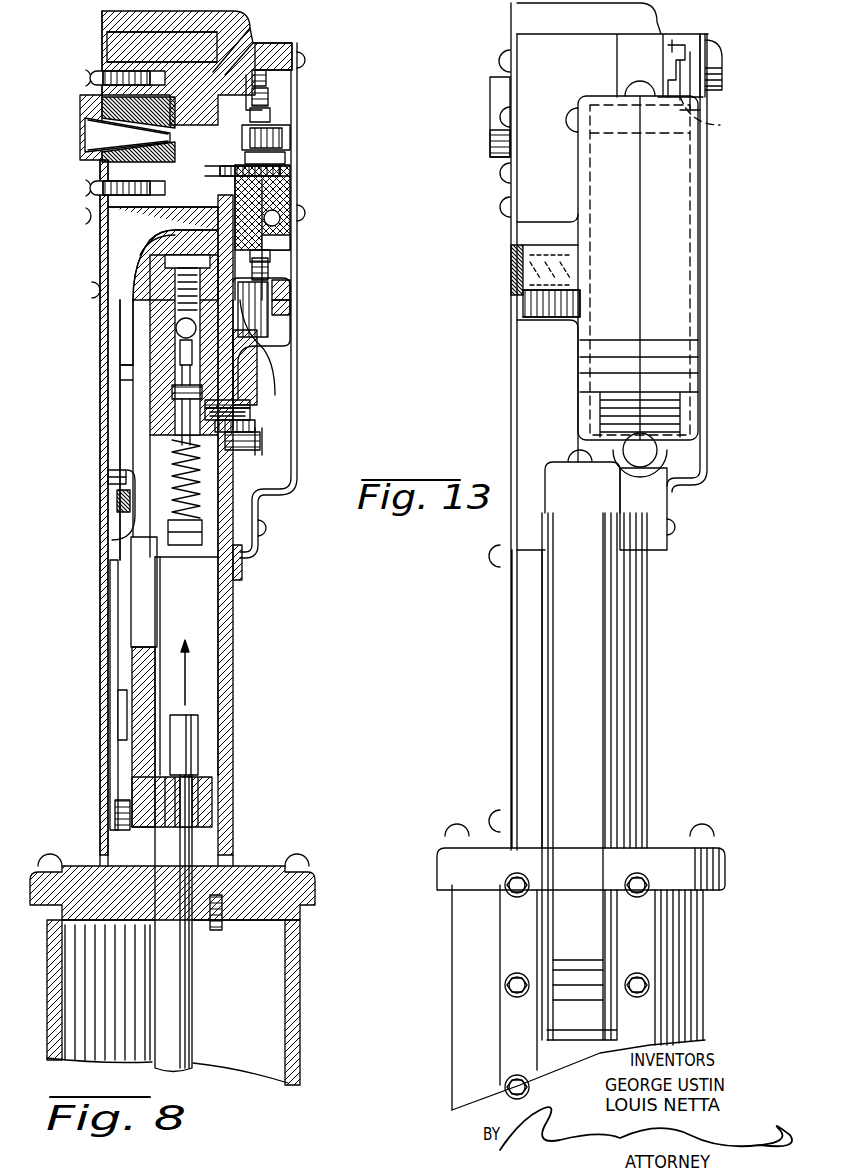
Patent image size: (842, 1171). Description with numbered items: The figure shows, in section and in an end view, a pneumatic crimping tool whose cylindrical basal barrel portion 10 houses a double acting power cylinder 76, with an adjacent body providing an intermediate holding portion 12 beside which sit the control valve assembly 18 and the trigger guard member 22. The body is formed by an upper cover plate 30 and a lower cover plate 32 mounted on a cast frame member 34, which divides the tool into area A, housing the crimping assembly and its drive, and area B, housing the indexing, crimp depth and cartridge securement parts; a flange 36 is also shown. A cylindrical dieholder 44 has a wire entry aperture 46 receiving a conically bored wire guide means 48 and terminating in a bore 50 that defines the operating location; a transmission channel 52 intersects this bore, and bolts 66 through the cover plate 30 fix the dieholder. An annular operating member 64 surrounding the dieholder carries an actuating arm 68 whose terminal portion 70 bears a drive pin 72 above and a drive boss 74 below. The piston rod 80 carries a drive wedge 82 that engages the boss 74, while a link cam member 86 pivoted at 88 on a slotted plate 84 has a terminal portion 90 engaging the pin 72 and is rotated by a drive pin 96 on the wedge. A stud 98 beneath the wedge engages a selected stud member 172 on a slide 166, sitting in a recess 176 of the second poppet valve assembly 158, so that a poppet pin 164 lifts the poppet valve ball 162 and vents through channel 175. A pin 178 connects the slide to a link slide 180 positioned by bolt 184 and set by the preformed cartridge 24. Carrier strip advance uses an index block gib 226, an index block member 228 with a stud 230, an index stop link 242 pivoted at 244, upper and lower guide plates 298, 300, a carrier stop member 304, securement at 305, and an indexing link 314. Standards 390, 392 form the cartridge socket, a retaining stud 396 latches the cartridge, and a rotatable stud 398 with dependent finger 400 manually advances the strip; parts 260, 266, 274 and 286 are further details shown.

In FIG. 8, the basal barrel portion 10 is at (297, 958).
In FIG. 13, the basal barrel portion 10 is at (697, 960).
In FIG. 13, the intermediate holding portion 12 is at (643, 695).
In FIG. 13, the control valve assembly 18 is at (562, 1053).
In FIG. 13, the trigger guard member 22 is at (598, 770).
In FIG. 13, the preformed cartridge 24 is at (680, 293).
In FIG. 8, the upper planar cover plate 30 is at (100, 412).
In FIG. 13, the upper planar cover plate 30 is at (508, 235).
In FIG. 8, the lower planar cover plate 32 is at (290, 460).
In FIG. 13, the lower planar cover plate 32 is at (707, 453).
In FIG. 8, the cast frame member 34 is at (230, 660).
In FIG. 13, the cast frame member 34 is at (538, 378).
In FIG. 8, the flange 36 is at (275, 857).
In FIG. 13, the flange 36 is at (668, 858).
In FIG. 8, the dieholder 44 is at (213, 70).
In FIG. 8, the wire entry aperture 46 is at (95, 148).
In FIG. 8, the wire guide means 48 is at (80, 118).
In FIG. 13, the wire guide means 48 is at (492, 98).
In FIG. 8, the bore 50 is at (258, 80).
In FIG. 8, the electrical contact element transmission channel 52 is at (145, 205).
In FIG. 8, the operating member 64 is at (118, 48).
In FIG. 8, the bolts 66 is at (97, 77).
In FIG. 13, the bolts 66 is at (503, 178).
In FIG. 8, the actuating arm 68 is at (113, 330).
In FIG. 8, the terminal portion 70 is at (118, 435).
In FIG. 8, the drive pin 72 is at (107, 470).
In FIG. 8, the drive boss 74 is at (123, 505).
In FIG. 8, the double acting power cylinder 76 is at (47, 1013).
In FIG. 8, the piston rod 80 is at (192, 1017).
In FIG. 8, the drive wedge 82 is at (148, 607).
In FIG. 8, the slotted plate 84 is at (108, 660).
In FIG. 8, the link cam member 86 is at (115, 605).
In FIG. 8, the pivot 88 is at (113, 708).
In FIG. 8, the terminal portion 90 is at (110, 492).
In FIG. 8, the drive pin 96 is at (115, 818).
In FIG. 8, the stud 98 is at (190, 740).
In FIG. 8, the second poppet valve assembly 158 is at (278, 288).
In FIG. 8, the poppet valve ball 162 is at (176, 328).
In FIG. 8, the poppet pin 164 is at (232, 372).
In FIG. 8, the slide 166 is at (253, 412).
In FIG. 8, the stud member 172 is at (187, 527).
In FIG. 8, the channel 175 is at (167, 347).
In FIG. 8, the recess 176 is at (167, 395).
In FIG. 8, the pin 178 is at (253, 423).
In FIG. 8, the link slide 180 is at (250, 400).
In FIG. 8, the bolt 184 is at (253, 443).
In FIG. 8, the index block gib 226 is at (280, 238).
In FIG. 8, the index block member 228 is at (290, 190).
In FIG. 8, the stud 230 is at (280, 220).
In FIG. 8, the index stop link 242 is at (272, 327).
In FIG. 8, the pivotal mounting 244 is at (280, 305).
In FIG. 8, the bolt 260 is at (268, 122).
In FIG. 8, the bolt 266 is at (263, 100).
In FIG. 8, the bolt 274 is at (262, 265).
In FIG. 8, the plunger housing 286 is at (275, 136).
In FIG. 8, the upper guide plate 298 is at (262, 85).
In FIG. 8, the lower guide plate 300 is at (243, 148).
In FIG. 8, the carrier stop member 304 is at (287, 173).
In FIG. 8, the securement 305 is at (158, 227).
In FIG. 8, the indexing link 314 is at (272, 163).
In FIG. 13, the standard 390 is at (650, 72).
In FIG. 13, the standard 392 is at (667, 472).
In FIG. 13, the retaining stud 396 is at (507, 282).
In FIG. 13, the rotatable stud 398 is at (717, 43).
In FIG. 13, the dependent finger 400 is at (705, 127).
In FIG. 8, the area A is at (135, 296).
In FIG. 8, the area B is at (275, 352).